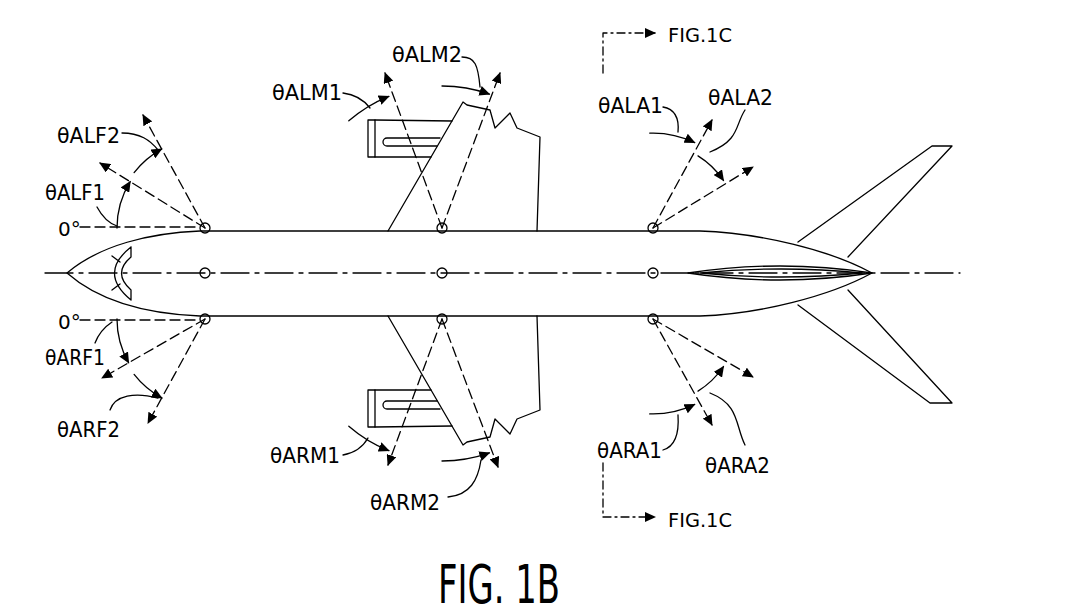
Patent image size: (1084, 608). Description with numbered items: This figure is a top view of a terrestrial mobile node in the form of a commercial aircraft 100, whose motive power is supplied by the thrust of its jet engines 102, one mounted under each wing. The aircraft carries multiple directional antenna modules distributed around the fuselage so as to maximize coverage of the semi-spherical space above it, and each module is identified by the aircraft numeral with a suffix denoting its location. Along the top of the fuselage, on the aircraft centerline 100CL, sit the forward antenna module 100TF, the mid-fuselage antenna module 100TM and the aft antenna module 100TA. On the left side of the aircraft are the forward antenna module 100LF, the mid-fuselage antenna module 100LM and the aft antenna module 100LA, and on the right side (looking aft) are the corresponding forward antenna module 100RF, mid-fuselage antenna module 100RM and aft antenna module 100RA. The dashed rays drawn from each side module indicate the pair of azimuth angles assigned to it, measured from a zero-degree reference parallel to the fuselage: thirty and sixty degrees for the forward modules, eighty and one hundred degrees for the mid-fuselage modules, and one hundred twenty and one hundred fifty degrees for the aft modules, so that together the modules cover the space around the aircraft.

The commercial aircraft 100 is at (865, 357).
The jet engines 102 is at (383, 134).
The aircraft centerline 100CL is at (380, 276).
The forward antenna module on the left side 100LF is at (206, 222).
The forward antenna module on the top 100TF is at (209, 270).
The forward antenna module on the right side 100RF is at (206, 325).
The mid-fuselage antenna module on the left side 100LM is at (436, 226).
The mid-fuselage antenna module on the top 100TM is at (446, 270).
The mid-fuselage antenna module on the right side 100RM is at (437, 325).
The aft antenna module on the left side 100LA is at (650, 223).
The aft antenna module on the top 100TA is at (650, 279).
The aft antenna module on the right side 100RA is at (650, 327).